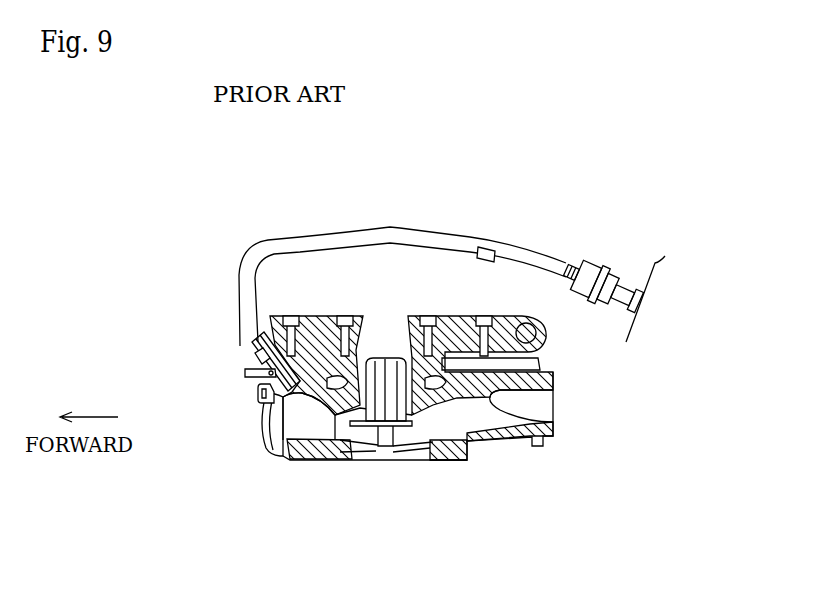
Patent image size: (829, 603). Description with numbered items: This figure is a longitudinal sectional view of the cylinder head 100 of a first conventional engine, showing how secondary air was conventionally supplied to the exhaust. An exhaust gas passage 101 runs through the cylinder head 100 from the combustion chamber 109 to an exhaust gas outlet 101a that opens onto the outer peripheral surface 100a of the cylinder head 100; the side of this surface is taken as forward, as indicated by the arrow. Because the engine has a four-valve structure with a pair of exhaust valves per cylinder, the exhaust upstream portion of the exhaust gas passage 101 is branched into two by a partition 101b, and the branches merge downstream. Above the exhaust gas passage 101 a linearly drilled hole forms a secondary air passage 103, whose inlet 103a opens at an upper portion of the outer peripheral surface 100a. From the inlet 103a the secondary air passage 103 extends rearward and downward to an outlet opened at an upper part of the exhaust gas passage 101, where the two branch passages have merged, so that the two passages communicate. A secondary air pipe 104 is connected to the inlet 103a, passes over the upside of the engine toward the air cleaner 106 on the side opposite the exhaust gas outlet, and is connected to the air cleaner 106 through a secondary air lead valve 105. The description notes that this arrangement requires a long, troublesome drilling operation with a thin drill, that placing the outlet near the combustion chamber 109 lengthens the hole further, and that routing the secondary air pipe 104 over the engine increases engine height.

The cylinder head 100 is at (470, 460).
The outer peripheral surface 100a is at (260, 390).
The exhaust gas passage 101 is at (314, 427).
The exhaust gas outlet 101a is at (270, 428).
The partition 101b is at (347, 434).
The secondary air passage 103 is at (262, 372).
The inlet 103a is at (258, 345).
The secondary air pipe 104 is at (346, 238).
The secondary air lead valve 105 is at (586, 260).
The air cleaner 106 is at (626, 342).
The combustion chamber 109 is at (425, 500).